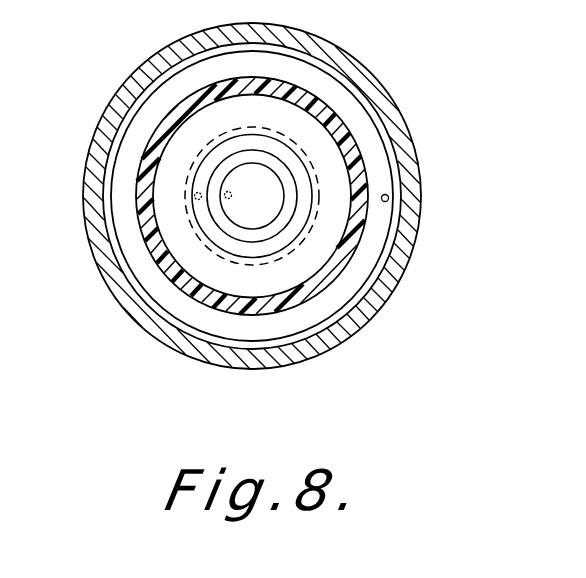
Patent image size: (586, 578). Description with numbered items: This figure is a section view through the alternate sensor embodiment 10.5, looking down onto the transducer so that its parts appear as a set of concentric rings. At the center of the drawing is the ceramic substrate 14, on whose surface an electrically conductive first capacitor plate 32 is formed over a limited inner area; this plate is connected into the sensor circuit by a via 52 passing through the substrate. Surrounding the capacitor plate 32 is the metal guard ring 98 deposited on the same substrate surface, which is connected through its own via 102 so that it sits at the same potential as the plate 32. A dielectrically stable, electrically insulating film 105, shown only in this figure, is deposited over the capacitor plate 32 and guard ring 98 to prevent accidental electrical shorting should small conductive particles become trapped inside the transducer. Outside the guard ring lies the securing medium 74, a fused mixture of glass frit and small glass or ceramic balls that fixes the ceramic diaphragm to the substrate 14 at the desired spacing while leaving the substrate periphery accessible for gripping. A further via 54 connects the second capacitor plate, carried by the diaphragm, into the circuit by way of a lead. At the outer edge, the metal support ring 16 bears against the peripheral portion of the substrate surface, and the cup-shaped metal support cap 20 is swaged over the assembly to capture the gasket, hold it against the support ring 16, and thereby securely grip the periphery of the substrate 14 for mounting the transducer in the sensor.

The sensor 10.5 is at (434, 150).
The metal support cap 20 is at (137, 313).
The metal support ring 16 is at (113, 270).
The metal guard ring 98 is at (160, 137).
The ceramic substrate 14 is at (165, 219).
The securing medium 74 is at (217, 150).
The electrically insulating film 105 is at (295, 249).
The first capacitor plate 32 is at (257, 185).
The via 52 is at (230, 192).
The via 102 is at (194, 195).
The via 54 is at (389, 198).